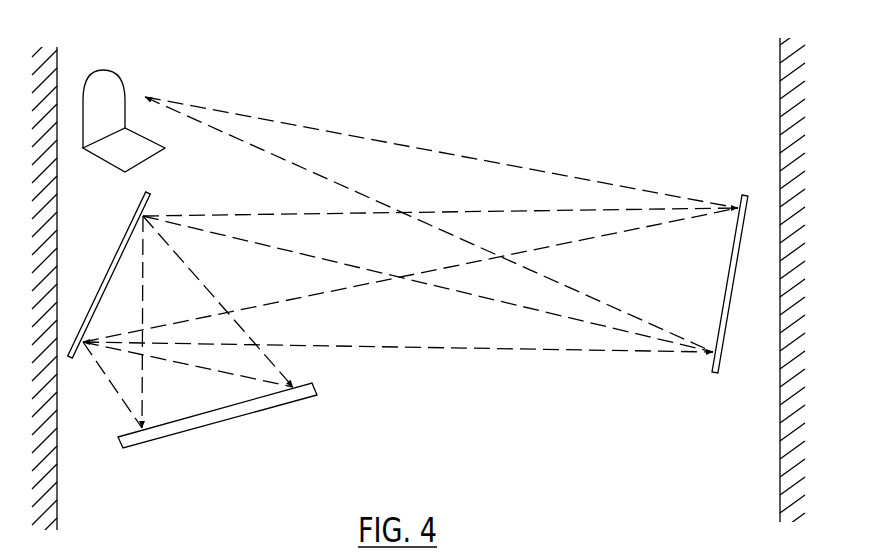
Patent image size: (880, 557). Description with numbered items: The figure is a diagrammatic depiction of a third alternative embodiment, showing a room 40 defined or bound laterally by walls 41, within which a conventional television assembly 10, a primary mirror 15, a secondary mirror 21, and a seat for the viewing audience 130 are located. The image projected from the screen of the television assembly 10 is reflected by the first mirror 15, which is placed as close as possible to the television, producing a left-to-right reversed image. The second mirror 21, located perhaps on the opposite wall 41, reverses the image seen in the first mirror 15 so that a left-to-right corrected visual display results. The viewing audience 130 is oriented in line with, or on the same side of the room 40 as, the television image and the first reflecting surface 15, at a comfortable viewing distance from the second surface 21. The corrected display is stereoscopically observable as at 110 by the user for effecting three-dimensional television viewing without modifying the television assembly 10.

The television assembly 10 is at (221, 426).
The primary mirror 15 is at (107, 275).
The secondary mirror 21 is at (748, 193).
The room 40 is at (498, 436).
The walls 41 is at (58, 491).
The stereoscopic observation 110 is at (150, 85).
The viewing audience 130 is at (103, 70).